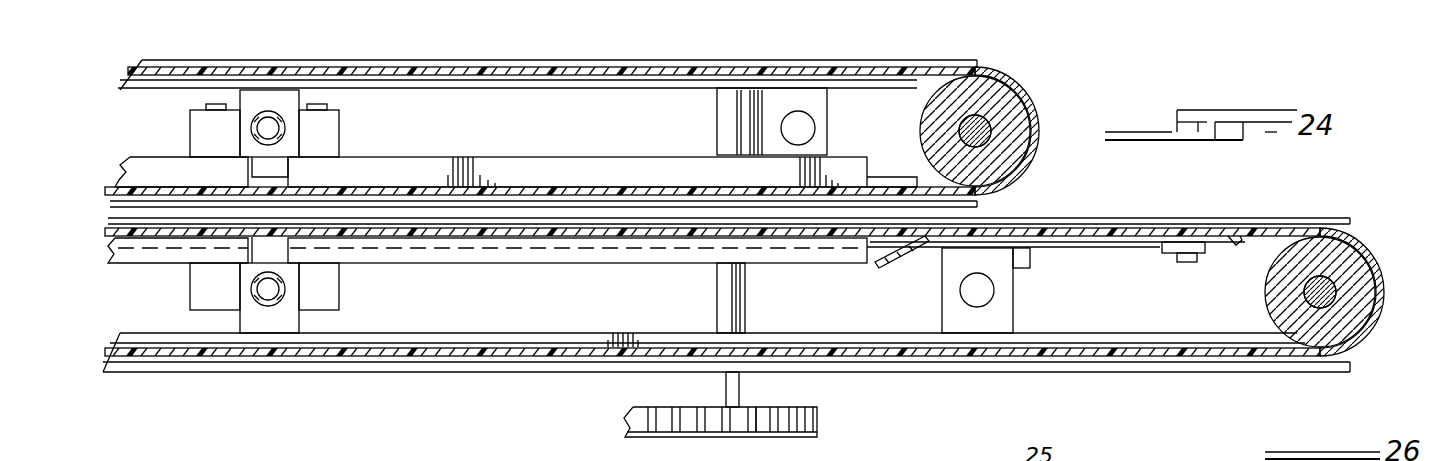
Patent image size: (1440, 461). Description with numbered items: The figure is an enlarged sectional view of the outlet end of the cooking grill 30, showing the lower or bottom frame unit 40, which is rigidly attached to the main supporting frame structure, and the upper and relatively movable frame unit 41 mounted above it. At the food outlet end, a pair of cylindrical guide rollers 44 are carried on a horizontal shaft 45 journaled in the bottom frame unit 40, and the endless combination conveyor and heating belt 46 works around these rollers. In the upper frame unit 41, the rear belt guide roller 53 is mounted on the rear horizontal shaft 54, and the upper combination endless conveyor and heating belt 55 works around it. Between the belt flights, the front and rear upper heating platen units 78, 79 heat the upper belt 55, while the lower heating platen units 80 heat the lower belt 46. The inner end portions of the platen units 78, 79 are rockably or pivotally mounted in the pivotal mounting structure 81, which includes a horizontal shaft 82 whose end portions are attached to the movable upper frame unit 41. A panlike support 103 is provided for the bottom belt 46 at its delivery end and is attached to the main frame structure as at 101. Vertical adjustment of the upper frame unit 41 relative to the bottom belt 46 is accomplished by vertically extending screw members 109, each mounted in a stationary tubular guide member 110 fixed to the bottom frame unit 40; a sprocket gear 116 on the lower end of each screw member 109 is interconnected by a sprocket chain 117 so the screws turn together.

The cooking grill 30 is at (997, 121).
The lower or bottom frame unit 40 is at (1085, 368).
The upper and relatively movable frame unit 41 is at (695, 58).
The cylindrical guide rollers 44 is at (1344, 279).
The horizontal shaft 45 is at (1332, 290).
The endless combination conveyor and heating belt 46 is at (1190, 353).
The rear belt guide roller 53 is at (1005, 141).
The rear horizontal shaft 54 is at (1020, 170).
The upper combination endless conveyor and heating belt 55 is at (814, 70).
The front upper heating platen unit 78 is at (168, 168).
The rear upper heating platen unit 79 is at (596, 170).
The lower heating platen units 80 is at (164, 250).
The pivotal mounting structure 81 is at (281, 90).
The horizontal shaft 82 is at (272, 128).
The attachment of panlike support 101 is at (1182, 263).
The panlike support 103 is at (1112, 238).
The vertically extending screw members 109 is at (741, 390).
The stationary tubular guide member 110 is at (728, 302).
The sprocket gear 116 is at (763, 420).
The sprocket chain 117 is at (812, 422).